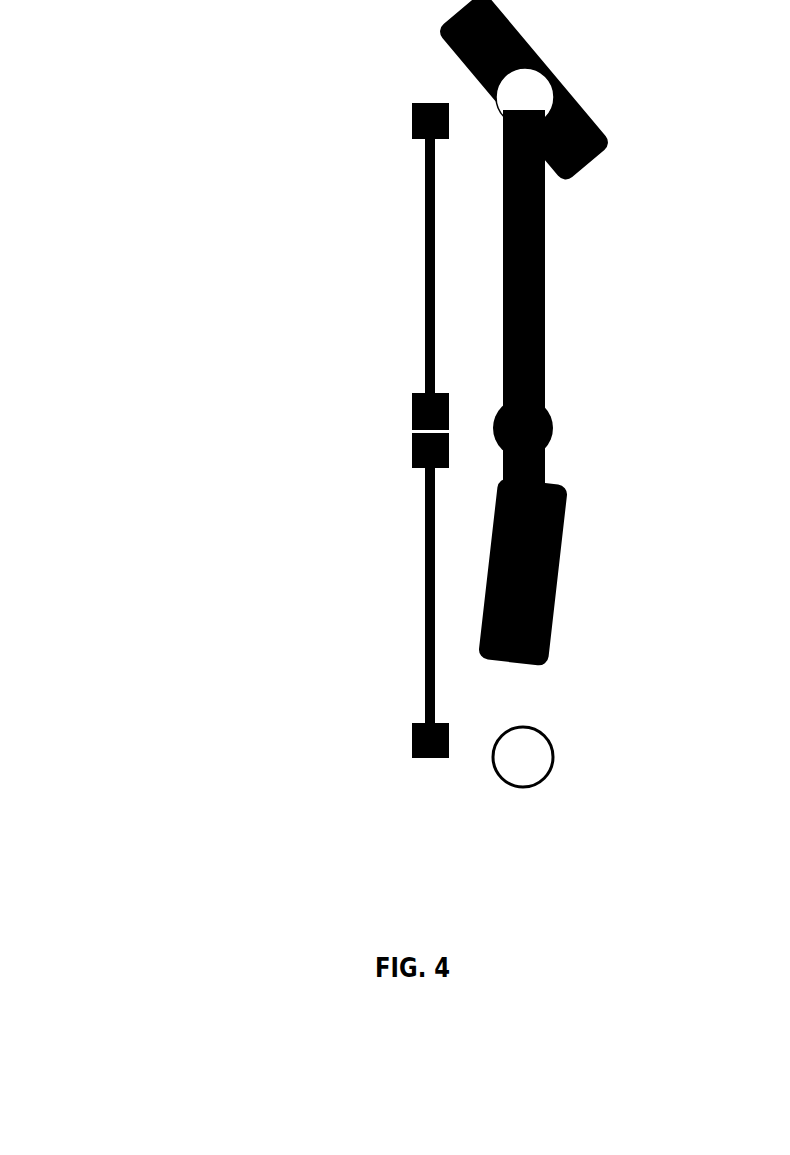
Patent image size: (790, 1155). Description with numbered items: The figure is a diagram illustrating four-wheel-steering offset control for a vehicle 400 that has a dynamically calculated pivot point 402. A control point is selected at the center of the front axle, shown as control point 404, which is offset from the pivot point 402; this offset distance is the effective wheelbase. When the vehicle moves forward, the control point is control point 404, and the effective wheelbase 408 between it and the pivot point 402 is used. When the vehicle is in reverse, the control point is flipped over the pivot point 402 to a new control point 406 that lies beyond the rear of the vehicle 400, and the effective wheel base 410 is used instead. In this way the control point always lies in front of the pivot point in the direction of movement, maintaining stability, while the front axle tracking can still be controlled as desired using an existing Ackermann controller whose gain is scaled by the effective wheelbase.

The vehicle 400 is at (545, 290).
The pivot point 402 is at (555, 432).
The control point 404 is at (543, 87).
The new control point 406 is at (553, 765).
The effective wheelbase 408 is at (427, 318).
The effective wheel base 410 is at (427, 550).